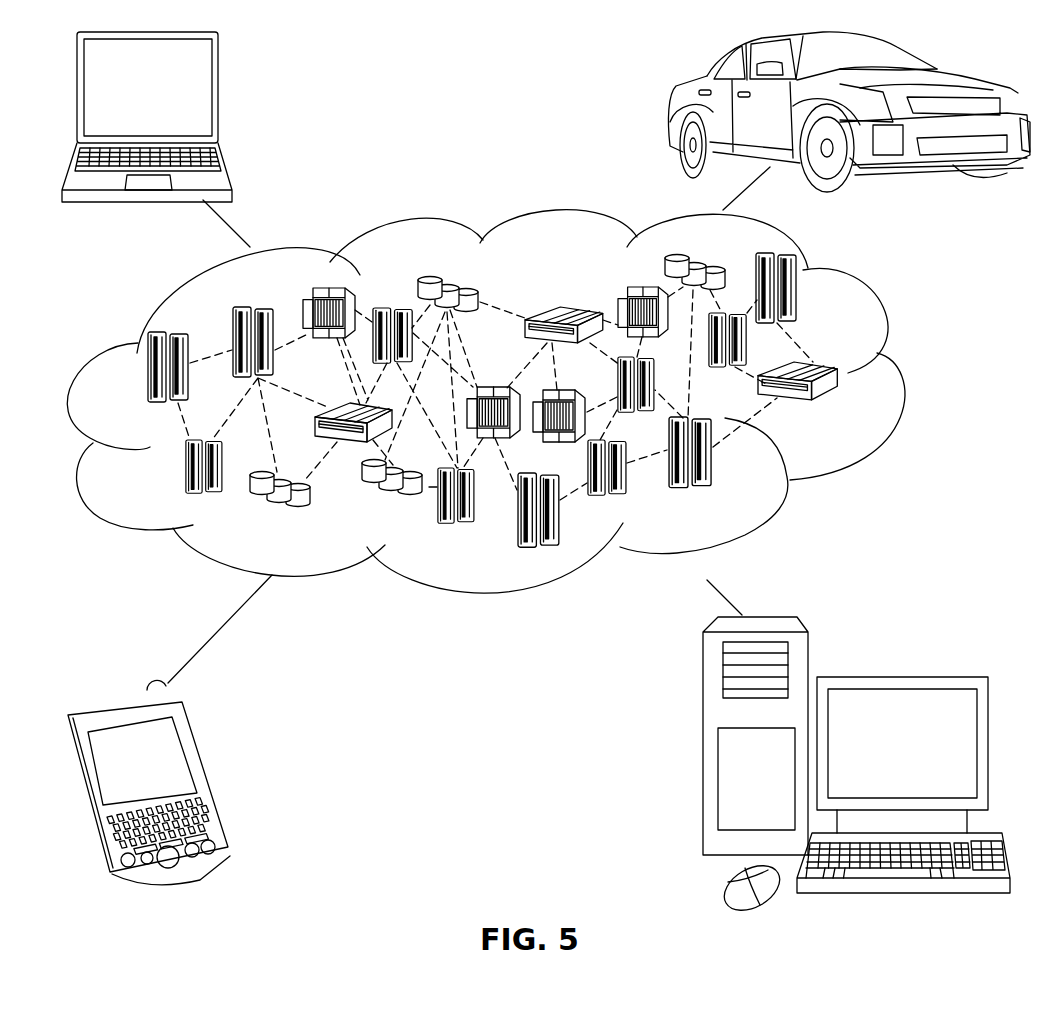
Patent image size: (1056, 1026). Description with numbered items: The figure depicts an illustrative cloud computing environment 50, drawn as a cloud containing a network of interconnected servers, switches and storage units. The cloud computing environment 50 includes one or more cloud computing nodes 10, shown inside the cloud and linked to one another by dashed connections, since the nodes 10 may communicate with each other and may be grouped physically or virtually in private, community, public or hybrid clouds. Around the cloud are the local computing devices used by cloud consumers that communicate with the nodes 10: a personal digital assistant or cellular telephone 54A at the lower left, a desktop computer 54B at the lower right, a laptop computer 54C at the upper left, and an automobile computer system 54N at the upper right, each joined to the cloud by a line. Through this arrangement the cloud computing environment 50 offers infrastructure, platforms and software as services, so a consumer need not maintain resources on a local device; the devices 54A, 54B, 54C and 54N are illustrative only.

The cloud computing environment 50 is at (898, 377).
The cloud computing nodes 10 is at (840, 409).
The personal digital assistant or cellular telephone 54A is at (210, 773).
The desktop computer 54B is at (900, 677).
The laptop computer 54C is at (218, 95).
The automobile computer system 54N is at (670, 107).